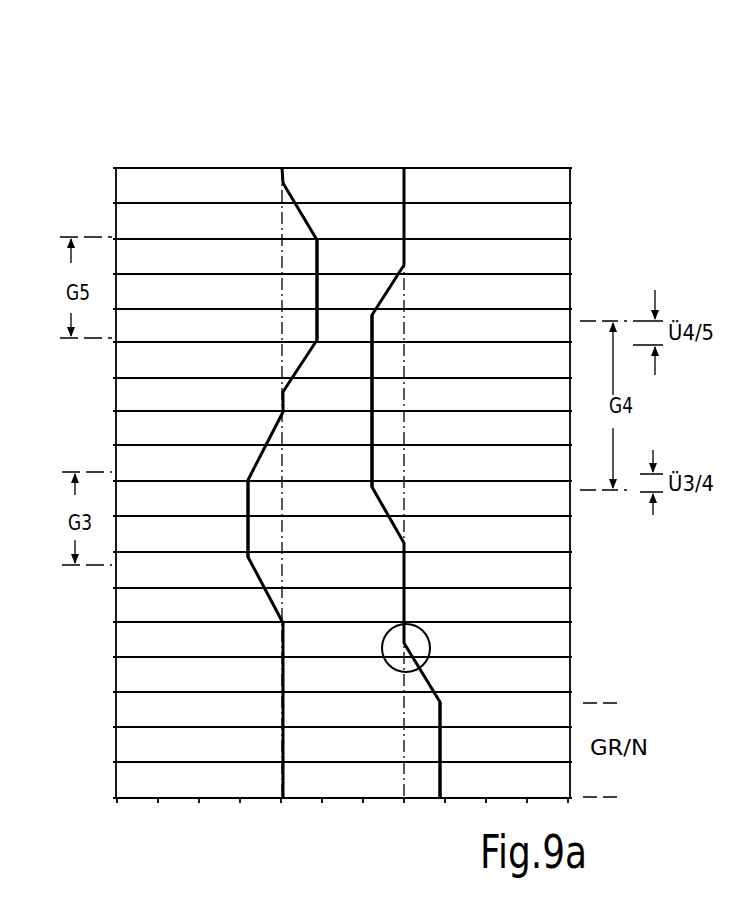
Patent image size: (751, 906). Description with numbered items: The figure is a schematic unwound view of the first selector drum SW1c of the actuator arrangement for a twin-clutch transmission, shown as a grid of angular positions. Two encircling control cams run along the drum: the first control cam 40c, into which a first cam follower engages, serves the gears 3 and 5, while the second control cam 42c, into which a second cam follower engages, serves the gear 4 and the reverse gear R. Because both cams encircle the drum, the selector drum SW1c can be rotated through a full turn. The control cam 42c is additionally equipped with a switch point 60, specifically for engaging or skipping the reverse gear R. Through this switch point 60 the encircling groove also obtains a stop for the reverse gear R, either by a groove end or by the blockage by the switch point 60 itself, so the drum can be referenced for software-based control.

The first selector drum SW1c is at (516, 166).
The first control cam 40c is at (284, 178).
The second control cam 42c is at (408, 178).
The third gear 3 is at (236, 518).
The fourth gear 4 is at (360, 401).
The fifth gear 5 is at (326, 290).
The reverse gear R is at (452, 750).
The switch point 60 is at (436, 628).